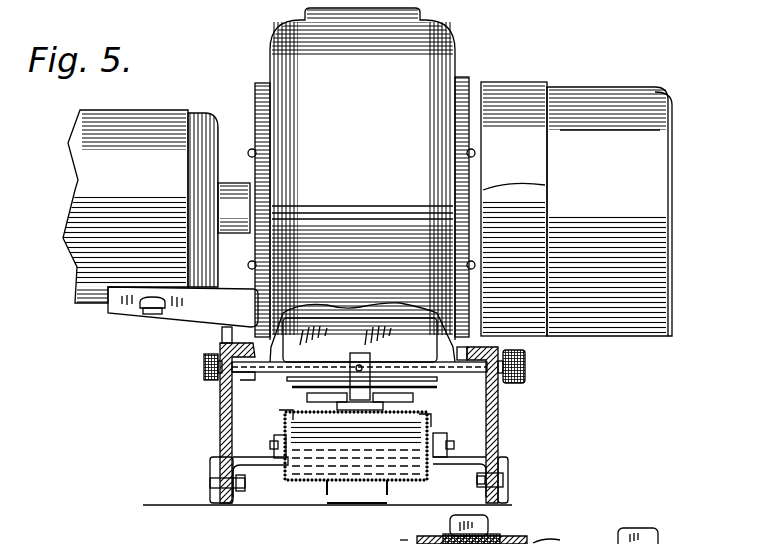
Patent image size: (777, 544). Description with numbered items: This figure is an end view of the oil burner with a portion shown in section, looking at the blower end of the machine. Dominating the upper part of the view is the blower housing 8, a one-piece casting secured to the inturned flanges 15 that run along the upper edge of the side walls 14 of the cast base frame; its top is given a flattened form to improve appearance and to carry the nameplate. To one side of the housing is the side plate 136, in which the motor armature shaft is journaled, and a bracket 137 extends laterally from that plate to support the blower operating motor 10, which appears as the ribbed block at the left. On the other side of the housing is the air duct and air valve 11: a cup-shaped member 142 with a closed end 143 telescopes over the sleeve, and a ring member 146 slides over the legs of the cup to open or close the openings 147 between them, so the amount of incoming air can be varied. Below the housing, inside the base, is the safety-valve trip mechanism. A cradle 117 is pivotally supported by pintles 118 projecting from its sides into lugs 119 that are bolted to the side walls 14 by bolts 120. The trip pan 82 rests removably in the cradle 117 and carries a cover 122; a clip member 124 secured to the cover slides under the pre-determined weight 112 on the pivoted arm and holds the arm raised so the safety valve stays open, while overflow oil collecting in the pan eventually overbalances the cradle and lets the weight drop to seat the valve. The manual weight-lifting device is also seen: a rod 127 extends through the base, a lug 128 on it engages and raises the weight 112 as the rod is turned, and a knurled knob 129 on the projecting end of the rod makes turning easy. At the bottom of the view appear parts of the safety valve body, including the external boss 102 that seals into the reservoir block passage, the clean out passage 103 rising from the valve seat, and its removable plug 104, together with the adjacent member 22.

The blower housing 8 is at (417, 63).
The blower operating motor 10 is at (92, 260).
The air valve 11 is at (633, 132).
The side walls 14 is at (222, 420).
The inturned flanges 15 is at (215, 344).
The block 22 is at (657, 540).
The trip pan 82 is at (390, 455).
The external boss 102 is at (494, 540).
The clean out passage 103 is at (533, 543).
The removable plug 104 is at (488, 523).
The pre-determined weight 112 is at (362, 356).
The cradle 117 is at (330, 480).
The pintles 118 is at (279, 458).
The lugs 119 is at (287, 462).
The bolts 120 is at (212, 482).
The cover 122 is at (302, 410).
The clip member 124 is at (380, 377).
The rod 127 is at (253, 377).
The lug 128 is at (490, 380).
The knurled knob 129 is at (526, 362).
The side plate 136 is at (255, 107).
The bracket 137 is at (183, 317).
The cup-shaped member 142 is at (620, 82).
The closed end 143 is at (675, 180).
The ring member 146 is at (531, 108).
The openings 147 is at (500, 207).